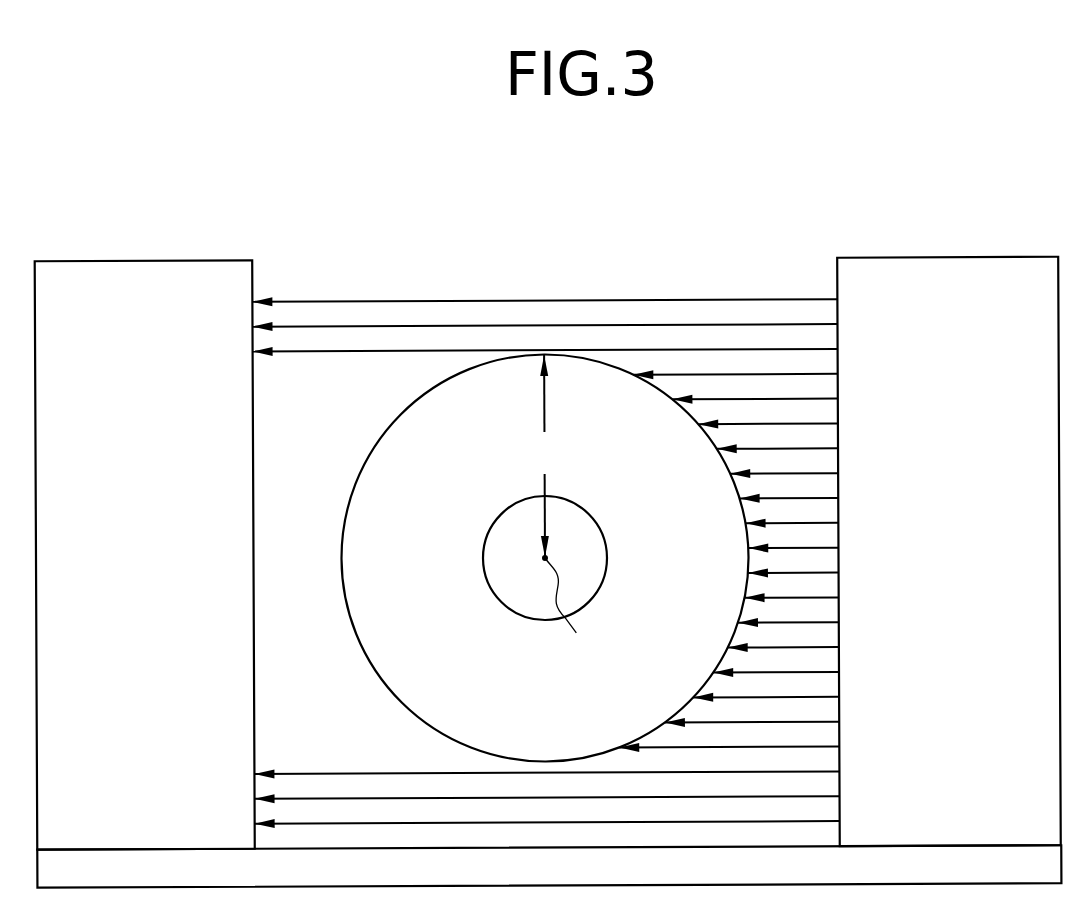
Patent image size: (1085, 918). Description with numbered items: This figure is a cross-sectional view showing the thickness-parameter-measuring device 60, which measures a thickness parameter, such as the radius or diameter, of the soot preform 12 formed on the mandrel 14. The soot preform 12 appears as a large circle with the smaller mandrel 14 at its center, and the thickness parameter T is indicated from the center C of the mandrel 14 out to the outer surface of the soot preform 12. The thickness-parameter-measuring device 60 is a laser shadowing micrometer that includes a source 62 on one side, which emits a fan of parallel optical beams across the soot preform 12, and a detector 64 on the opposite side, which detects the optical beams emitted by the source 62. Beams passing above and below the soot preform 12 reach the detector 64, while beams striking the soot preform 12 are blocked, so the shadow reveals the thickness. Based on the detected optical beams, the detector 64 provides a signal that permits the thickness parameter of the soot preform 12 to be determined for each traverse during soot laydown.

The thickness-parameter-measuring device 60 is at (805, 222).
The source 62 is at (923, 270).
The detector 64 is at (177, 272).
The soot preform 12 is at (712, 673).
The mandrel 14 is at (602, 533).